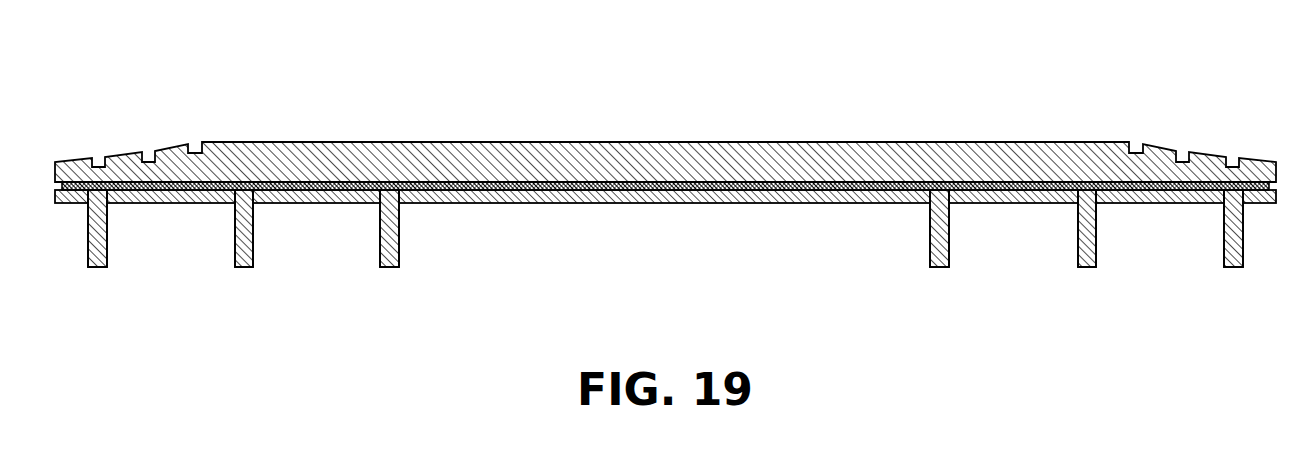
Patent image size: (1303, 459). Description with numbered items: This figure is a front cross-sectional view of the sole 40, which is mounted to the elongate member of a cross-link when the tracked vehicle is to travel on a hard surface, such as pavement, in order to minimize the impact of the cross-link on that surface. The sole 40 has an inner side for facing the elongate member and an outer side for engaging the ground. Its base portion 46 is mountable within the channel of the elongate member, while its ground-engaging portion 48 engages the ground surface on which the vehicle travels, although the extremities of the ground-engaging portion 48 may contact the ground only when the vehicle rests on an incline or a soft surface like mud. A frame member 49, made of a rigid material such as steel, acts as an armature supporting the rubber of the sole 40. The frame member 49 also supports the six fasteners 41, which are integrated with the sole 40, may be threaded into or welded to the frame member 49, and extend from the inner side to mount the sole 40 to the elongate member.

The sole 40 is at (872, 54).
The fasteners 41 is at (107, 260).
The base portion 46 is at (789, 202).
The ground-engaging portion 48 is at (617, 158).
The frame member 49 is at (526, 195).